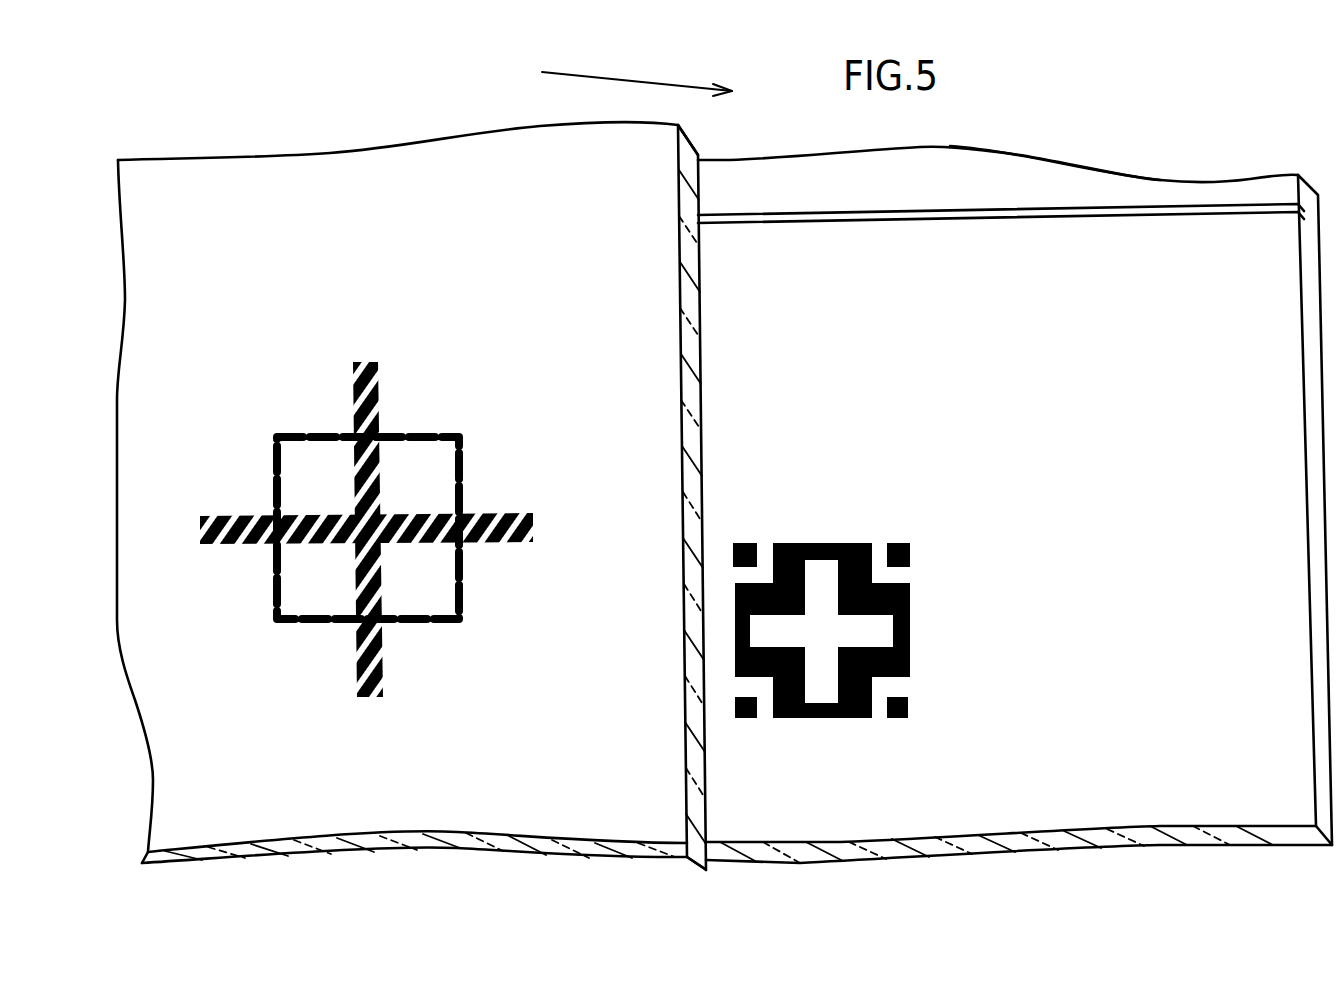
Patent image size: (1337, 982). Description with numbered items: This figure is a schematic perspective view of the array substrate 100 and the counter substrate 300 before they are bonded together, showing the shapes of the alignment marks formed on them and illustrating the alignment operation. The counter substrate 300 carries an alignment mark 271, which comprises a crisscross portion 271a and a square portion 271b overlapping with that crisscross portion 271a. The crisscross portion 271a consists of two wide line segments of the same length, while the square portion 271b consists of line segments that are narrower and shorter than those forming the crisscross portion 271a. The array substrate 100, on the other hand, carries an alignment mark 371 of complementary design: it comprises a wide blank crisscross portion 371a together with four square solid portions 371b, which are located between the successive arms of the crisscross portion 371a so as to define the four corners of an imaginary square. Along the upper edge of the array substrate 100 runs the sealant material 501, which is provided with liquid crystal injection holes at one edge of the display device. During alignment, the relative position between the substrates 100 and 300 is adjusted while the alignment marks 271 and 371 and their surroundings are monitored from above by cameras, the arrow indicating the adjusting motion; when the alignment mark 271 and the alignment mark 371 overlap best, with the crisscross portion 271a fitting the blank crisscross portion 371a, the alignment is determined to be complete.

The array substrate 100 is at (1140, 830).
The counter substrate 300 is at (223, 808).
The sealant material 501 is at (1043, 180).
The alignment mark 271 is at (386, 641).
The crisscross portion 271a is at (383, 676).
The square portion 271b is at (318, 609).
The alignment mark 371 is at (838, 741).
The blank crisscross portion 371a is at (798, 718).
The square solid portions 371b is at (745, 718).